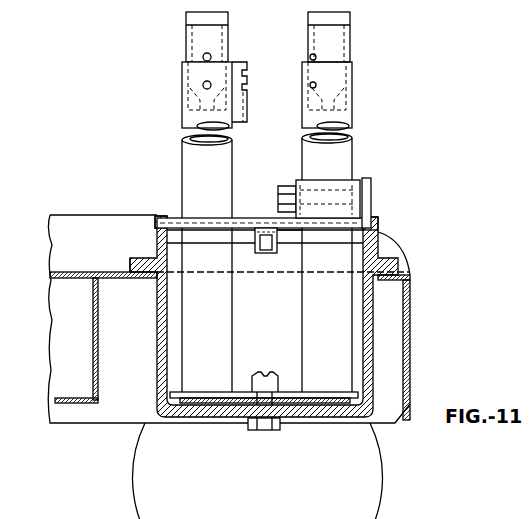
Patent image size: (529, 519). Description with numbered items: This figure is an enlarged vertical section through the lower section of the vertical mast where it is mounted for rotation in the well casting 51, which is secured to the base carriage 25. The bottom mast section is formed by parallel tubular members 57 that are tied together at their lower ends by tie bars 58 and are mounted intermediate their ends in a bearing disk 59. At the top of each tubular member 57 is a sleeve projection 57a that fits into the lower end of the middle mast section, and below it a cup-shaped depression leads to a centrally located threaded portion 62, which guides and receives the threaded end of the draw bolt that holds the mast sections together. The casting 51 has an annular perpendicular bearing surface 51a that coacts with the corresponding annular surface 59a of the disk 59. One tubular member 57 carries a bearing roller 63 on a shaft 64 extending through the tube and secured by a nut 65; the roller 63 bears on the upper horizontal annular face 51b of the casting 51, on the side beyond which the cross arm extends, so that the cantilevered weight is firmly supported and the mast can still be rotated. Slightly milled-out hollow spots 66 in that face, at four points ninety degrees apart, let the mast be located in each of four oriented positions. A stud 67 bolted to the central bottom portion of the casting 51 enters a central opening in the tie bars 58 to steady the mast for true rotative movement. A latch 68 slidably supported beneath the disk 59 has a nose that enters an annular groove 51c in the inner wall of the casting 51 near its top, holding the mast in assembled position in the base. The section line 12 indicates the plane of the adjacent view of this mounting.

The section line 12 is at (152, 168).
The base carriage 25 is at (89, 272).
The well casting 51 is at (201, 410).
The annular perpendicular bearing surface 51a is at (163, 218).
The upper horizontal annular face 51b is at (375, 225).
The annular groove 51c is at (289, 236).
The tubular members 57 is at (352, 118).
The sleeve projections 57a is at (352, 46).
The tie bars 58 is at (240, 392).
The bearing disk 59 is at (209, 220).
The annular surface 59a is at (186, 223).
The threaded portion 62 is at (320, 104).
The bearing roller 63 is at (372, 206).
The shaft 64 is at (343, 192).
The nut 65 is at (290, 190).
The hollow spots 66 is at (262, 219).
The stud 67 is at (272, 385).
The latch 68 is at (262, 243).